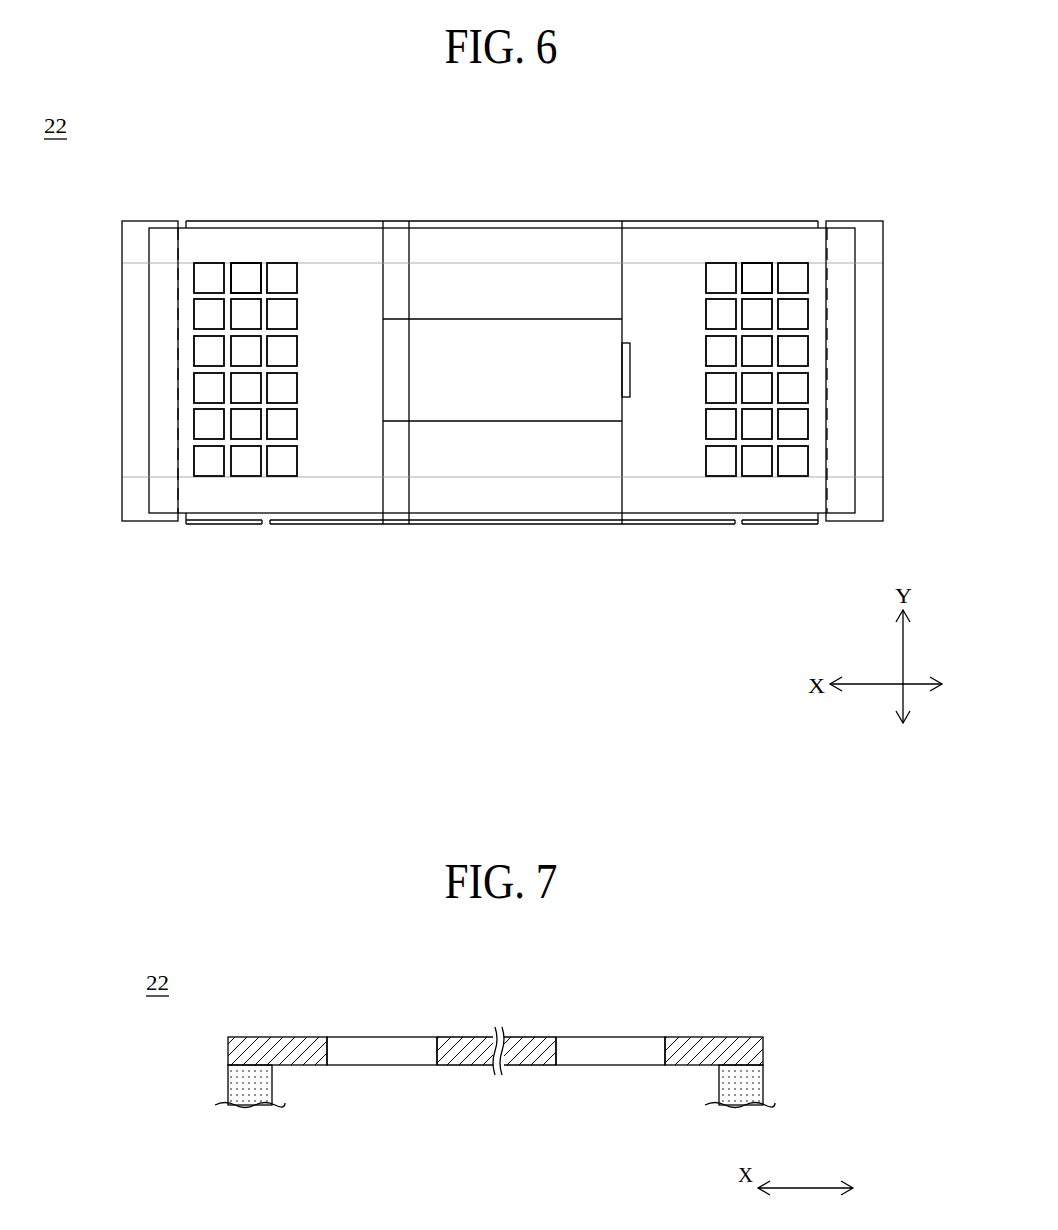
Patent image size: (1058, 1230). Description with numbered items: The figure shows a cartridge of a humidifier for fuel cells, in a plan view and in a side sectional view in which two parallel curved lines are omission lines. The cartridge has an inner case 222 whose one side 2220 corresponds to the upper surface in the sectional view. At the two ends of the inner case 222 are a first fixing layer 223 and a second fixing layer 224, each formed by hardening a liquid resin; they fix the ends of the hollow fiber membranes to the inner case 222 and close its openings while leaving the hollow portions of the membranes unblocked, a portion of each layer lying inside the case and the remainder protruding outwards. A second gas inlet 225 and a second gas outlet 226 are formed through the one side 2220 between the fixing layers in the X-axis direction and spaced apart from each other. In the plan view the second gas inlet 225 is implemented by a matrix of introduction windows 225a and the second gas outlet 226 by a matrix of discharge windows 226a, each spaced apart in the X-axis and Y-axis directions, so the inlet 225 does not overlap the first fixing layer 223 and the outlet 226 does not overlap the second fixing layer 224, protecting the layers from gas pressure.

In FIG. 6, the inner case 222 is at (516, 498).
In FIG. 7, the one side of the inner case 2220 is at (540, 1057).
In FIG. 6, the first fixing layer 223 is at (122, 367).
In FIG. 7, the first fixing layer 223 is at (245, 1085).
In FIG. 6, the second fixing layer 224 is at (883, 368).
In FIG. 7, the second fixing layer 224 is at (757, 1085).
In FIG. 6, the second gas inlet 225 is at (243, 479).
In FIG. 7, the second gas inlet 225 is at (368, 1052).
In FIG. 6, the introduction windows 225a is at (250, 279).
In FIG. 6, the second gas outlet 226 is at (763, 479).
In FIG. 7, the second gas outlet 226 is at (614, 1052).
In FIG. 6, the discharge windows 226a is at (767, 279).